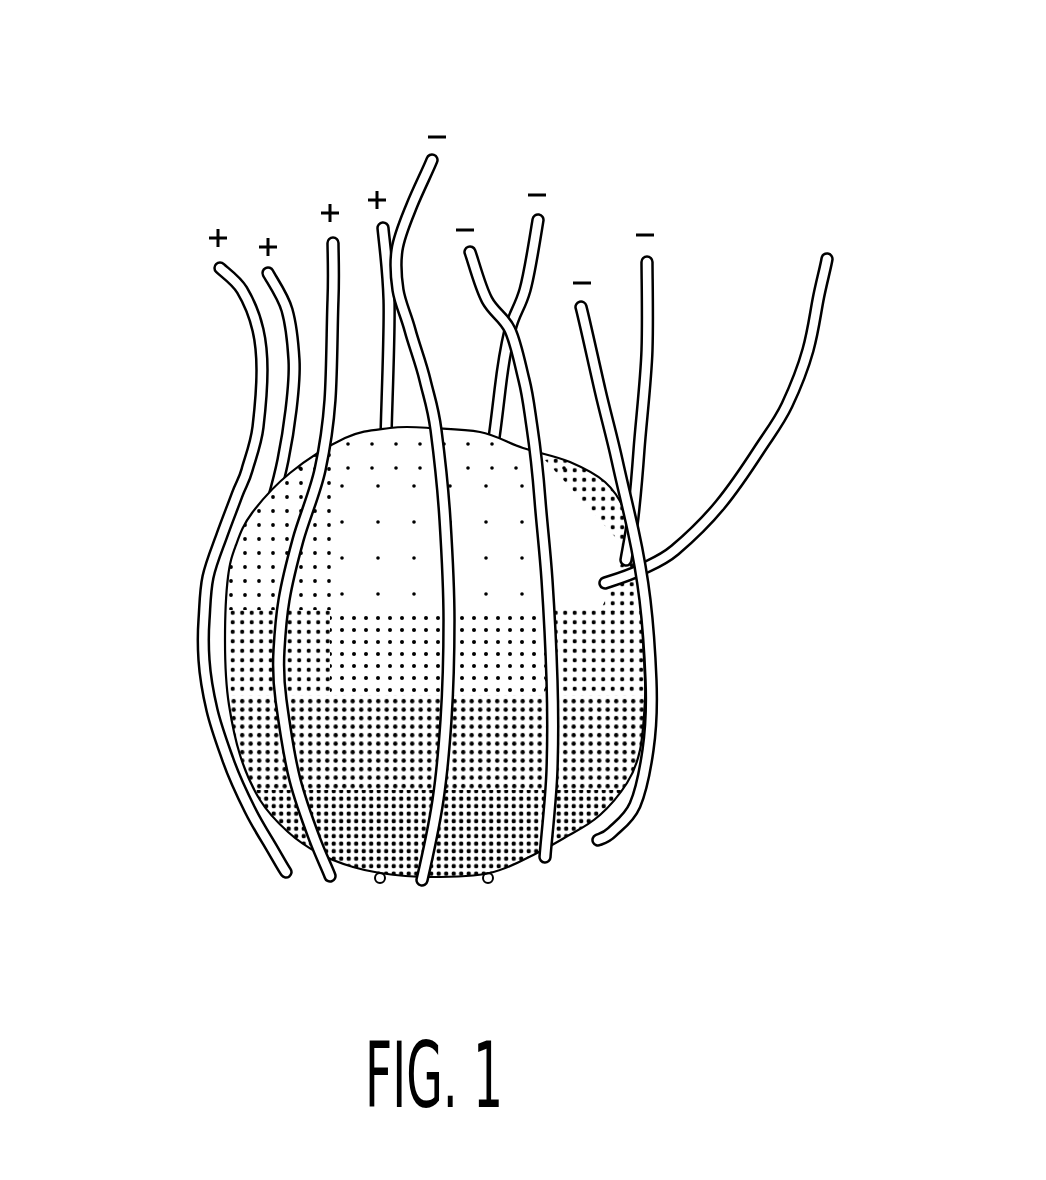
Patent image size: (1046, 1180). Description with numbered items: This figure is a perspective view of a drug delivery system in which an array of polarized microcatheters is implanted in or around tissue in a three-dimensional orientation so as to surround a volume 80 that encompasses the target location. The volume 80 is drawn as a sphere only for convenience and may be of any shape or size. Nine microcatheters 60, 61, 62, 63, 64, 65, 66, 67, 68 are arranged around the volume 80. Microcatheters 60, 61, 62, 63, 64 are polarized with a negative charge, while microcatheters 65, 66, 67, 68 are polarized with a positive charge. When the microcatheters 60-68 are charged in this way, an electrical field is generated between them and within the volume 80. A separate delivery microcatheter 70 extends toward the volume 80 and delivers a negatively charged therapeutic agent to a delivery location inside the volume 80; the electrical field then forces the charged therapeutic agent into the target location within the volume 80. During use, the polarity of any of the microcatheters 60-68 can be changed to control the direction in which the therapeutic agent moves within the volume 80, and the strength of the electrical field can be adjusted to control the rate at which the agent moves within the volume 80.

The microcatheter 60 is at (640, 762).
The microcatheter 61 is at (652, 293).
The microcatheter 62 is at (548, 237).
The microcatheter 63 is at (480, 262).
The microcatheter 64 is at (440, 166).
The microcatheter 65 is at (382, 236).
The microcatheter 66 is at (290, 412).
The microcatheter 67 is at (197, 654).
The microcatheter 68 is at (330, 876).
The delivery microcatheter 70 is at (823, 283).
The volume 80 is at (615, 694).